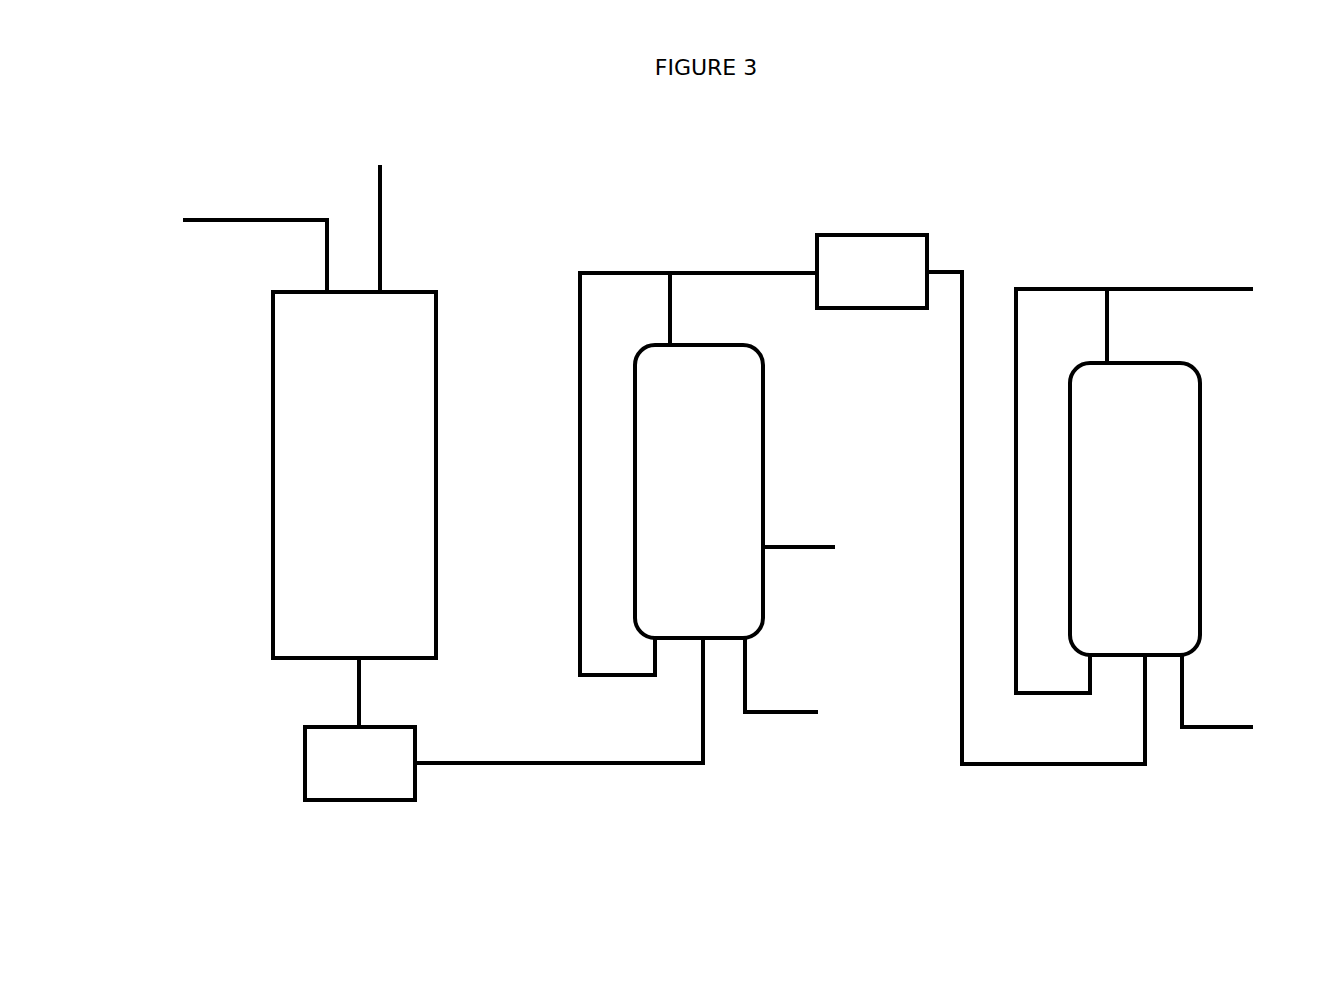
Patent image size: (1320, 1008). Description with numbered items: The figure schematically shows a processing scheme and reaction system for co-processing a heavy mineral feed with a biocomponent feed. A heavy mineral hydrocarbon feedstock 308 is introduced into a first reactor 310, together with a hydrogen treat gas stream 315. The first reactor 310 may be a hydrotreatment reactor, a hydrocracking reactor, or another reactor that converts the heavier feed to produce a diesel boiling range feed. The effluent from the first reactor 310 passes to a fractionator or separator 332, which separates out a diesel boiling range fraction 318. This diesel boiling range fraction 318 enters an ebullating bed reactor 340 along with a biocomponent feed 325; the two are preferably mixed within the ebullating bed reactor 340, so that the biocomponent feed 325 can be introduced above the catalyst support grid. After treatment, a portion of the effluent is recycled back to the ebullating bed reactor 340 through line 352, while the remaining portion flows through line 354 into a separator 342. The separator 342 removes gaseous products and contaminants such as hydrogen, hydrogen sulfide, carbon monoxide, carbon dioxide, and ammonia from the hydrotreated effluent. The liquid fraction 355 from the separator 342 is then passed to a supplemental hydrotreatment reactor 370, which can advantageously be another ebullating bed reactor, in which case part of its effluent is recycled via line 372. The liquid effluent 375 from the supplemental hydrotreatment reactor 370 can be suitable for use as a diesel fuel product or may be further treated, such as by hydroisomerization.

The heavy mineral hydrocarbon feedstock 308 is at (200, 238).
The hydrogen treat gas stream 315 is at (400, 237).
The first reactor 310 is at (354, 475).
The fractionator or separator 332 is at (360, 729).
The diesel boiling range fraction 318 is at (505, 778).
The recycle line 352 is at (617, 255).
The effluent line 354 is at (762, 255).
The separator 342 is at (872, 271).
The ebullating bed reactor 340 is at (699, 491).
The biocomponent feed 325 is at (818, 565).
The liquid fraction 355 is at (1037, 783).
The recycle line 372 is at (1053, 272).
The liquid effluent 375 is at (1162, 270).
The supplemental hydrotreatment reactor 370 is at (1135, 509).